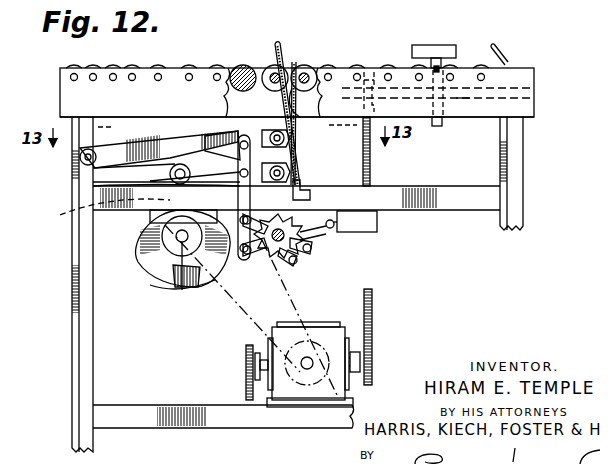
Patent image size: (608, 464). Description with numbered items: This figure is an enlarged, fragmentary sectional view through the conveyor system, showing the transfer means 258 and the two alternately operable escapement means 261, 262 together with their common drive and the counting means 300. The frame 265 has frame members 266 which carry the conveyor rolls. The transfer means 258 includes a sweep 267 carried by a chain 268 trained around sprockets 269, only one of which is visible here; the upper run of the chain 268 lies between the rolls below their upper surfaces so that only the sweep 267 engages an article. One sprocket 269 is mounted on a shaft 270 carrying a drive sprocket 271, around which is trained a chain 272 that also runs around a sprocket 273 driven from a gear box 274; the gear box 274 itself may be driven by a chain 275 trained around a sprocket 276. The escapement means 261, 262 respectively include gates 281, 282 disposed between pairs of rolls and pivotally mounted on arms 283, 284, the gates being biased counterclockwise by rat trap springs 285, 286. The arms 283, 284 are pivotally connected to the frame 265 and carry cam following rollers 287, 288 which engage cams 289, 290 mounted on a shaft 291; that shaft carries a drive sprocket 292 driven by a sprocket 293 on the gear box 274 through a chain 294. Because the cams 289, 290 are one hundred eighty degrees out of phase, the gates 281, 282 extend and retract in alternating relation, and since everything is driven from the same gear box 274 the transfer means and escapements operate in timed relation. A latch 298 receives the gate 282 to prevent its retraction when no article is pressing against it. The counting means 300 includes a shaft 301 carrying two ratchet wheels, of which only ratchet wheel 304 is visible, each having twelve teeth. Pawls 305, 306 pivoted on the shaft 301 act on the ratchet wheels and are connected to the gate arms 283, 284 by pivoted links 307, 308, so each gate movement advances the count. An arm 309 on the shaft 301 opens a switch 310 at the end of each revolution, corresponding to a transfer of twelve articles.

The transfer means 258 is at (457, 47).
The escapement means 261 is at (300, 66).
The escapement means 262 is at (270, 49).
The frame 265 is at (72, 258).
The frame members 266 is at (534, 80).
The sweep 267 is at (419, 45).
The chain 268 is at (437, 56).
The sprockets 269 is at (440, 126).
The shaft 270 is at (470, 100).
The drive sprocket 271 is at (371, 78).
The chain 272 is at (371, 158).
The sprocket 273 is at (375, 360).
The gear box 274 is at (340, 333).
The chain 275 is at (246, 392).
The sprocket 276 is at (254, 364).
The gate 281 is at (320, 72).
The gate 282 is at (278, 44).
The arm 283 is at (155, 166).
The arm 284 is at (115, 155).
The rat trap spring 285 is at (290, 152).
The rat trap spring 286 is at (270, 130).
The cam following roller 287 is at (95, 200).
The cam following roller 288 is at (95, 185).
The cam 289 is at (186, 290).
The cam 290 is at (140, 248).
The shaft 291 is at (152, 270).
The drive sprocket 292 is at (168, 276).
The sprocket 293 is at (327, 415).
The chain 294 is at (238, 330).
The latch 298 is at (306, 183).
The counting means 300 is at (324, 252).
The shaft 301 is at (284, 265).
The ratchet wheel 304 is at (295, 268).
The pawl 305 is at (315, 255).
The pawl 306 is at (305, 265).
The pivoted link 307 is at (246, 262).
The pivoted link 308 is at (228, 153).
The arm 309 is at (325, 205).
The switch 310 is at (378, 222).